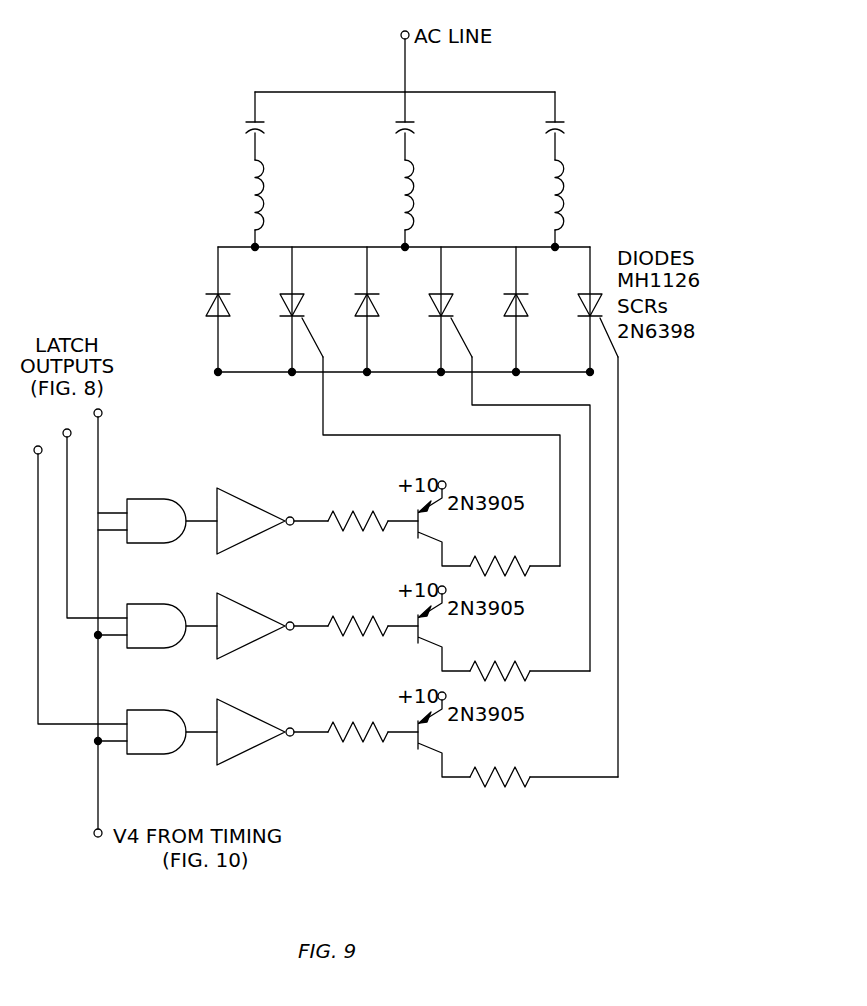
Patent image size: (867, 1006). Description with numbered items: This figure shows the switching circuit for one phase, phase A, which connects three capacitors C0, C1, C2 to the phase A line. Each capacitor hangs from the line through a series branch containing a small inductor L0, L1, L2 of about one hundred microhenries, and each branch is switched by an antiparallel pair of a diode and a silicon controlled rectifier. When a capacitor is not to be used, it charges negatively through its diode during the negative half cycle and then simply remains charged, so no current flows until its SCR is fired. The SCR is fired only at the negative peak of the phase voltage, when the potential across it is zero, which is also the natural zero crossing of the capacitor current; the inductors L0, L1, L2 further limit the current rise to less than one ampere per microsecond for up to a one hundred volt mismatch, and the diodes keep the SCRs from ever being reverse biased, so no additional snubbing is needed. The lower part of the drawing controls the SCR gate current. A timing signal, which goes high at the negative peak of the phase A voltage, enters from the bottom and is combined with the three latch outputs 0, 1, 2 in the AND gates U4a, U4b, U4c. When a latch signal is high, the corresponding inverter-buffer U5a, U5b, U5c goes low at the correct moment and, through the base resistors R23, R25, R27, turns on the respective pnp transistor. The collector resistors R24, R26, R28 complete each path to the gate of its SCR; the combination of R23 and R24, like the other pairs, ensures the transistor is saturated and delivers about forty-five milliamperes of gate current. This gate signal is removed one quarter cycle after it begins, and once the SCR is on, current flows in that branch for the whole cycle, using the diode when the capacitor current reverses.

The capacitor C0 is at (572, 139).
The capacitor C1 is at (422, 139).
The capacitor C2 is at (272, 139).
The inductor L0 is at (575, 195).
The inductor L1 is at (425, 195).
The inductor L2 is at (275, 195).
The AND gate U4a is at (156, 534).
The AND gate U4b is at (156, 639).
The AND gate U4c is at (156, 745).
The inverter-buffer U5a is at (255, 529).
The inverter-buffer U5b is at (255, 634).
The inverter-buffer U5c is at (255, 740).
The resistor R23 is at (356, 497).
The resistor R24 is at (500, 544).
The resistor R25 is at (356, 602).
The resistor R26 is at (500, 649).
The resistor R27 is at (356, 708).
The resistor R28 is at (500, 755).
The latch output 0 is at (80, 581).
The latch output 1 is at (95, 520).
The latch output 2 is at (106, 615).